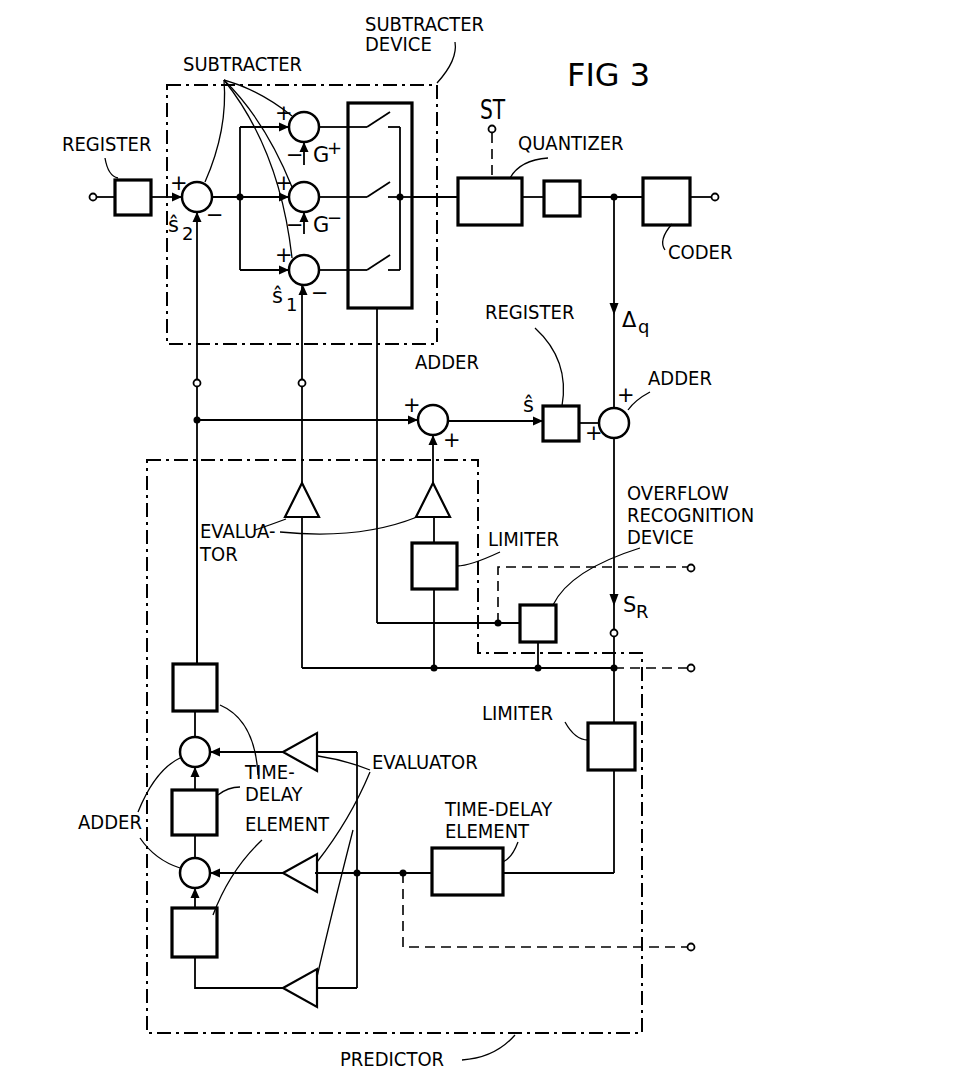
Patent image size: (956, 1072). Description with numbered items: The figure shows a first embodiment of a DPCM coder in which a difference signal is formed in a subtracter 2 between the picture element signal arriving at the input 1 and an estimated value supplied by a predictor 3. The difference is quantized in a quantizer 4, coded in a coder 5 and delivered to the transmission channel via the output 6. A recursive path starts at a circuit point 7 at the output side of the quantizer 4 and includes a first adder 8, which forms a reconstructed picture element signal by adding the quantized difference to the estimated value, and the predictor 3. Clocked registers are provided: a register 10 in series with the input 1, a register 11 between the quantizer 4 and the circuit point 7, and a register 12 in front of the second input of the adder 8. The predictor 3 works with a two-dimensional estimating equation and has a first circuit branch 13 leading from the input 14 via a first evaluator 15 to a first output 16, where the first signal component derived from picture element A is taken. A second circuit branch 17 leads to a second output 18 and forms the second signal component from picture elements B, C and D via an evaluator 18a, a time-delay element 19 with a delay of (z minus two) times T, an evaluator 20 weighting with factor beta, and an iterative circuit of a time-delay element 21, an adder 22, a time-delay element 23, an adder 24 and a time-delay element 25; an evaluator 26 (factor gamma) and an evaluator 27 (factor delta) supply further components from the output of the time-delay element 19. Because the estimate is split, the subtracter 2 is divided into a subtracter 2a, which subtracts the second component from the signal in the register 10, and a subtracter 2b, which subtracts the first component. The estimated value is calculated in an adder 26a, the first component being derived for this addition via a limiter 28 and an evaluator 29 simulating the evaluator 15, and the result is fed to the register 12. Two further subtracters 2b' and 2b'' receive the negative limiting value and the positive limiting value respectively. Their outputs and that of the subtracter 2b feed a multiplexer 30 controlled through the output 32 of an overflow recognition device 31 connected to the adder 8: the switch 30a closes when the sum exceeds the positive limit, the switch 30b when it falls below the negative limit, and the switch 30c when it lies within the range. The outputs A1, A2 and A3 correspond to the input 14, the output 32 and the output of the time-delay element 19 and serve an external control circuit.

The input 1 is at (92, 198).
The subtracter 2 is at (167, 110).
The subtracter 2a is at (209, 185).
The subtracter 2b is at (318, 259).
The subtracter 2b' is at (320, 186).
The subtracter 2b'' is at (323, 114).
The predictor 3 is at (147, 612).
The quantizer 4 is at (490, 201).
The coder 5 is at (666, 201).
The output 6 is at (712, 198).
The circuit point 7 is at (612, 178).
The first adder 8 is at (623, 423).
The register 10 is at (133, 197).
The register 11 is at (562, 198).
The register 12 is at (561, 423).
The first circuit branch 13 is at (335, 668).
The input 14 is at (601, 632).
The first evaluator 15 is at (292, 500).
The first output 16 is at (290, 382).
The line 17 is at (197, 616).
The second output 18 is at (184, 382).
The evaluator 18a is at (611, 746).
The time-delay element 19 is at (467, 871).
The evaluator 20 is at (297, 974).
The time-delay element 21 is at (209, 932).
The adder 22 is at (208, 864).
The time-delay element 23 is at (210, 812).
The adder 24 is at (209, 743).
The time-delay element 25 is at (211, 687).
The evaluator 26 is at (300, 859).
The adder 26a is at (460, 380).
The evaluator 27 is at (300, 739).
The limiter 28 is at (434, 566).
The evaluator 29 is at (423, 500).
The multiplexer 30 is at (387, 225).
The switch 30a is at (374, 138).
The switch 30b is at (380, 208).
The switch 30c is at (374, 281).
The overflow recognition device 31 is at (538, 623).
The output 32 is at (501, 638).
The output A1 is at (669, 668).
The output A2 is at (611, 587).
The output A3 is at (564, 918).